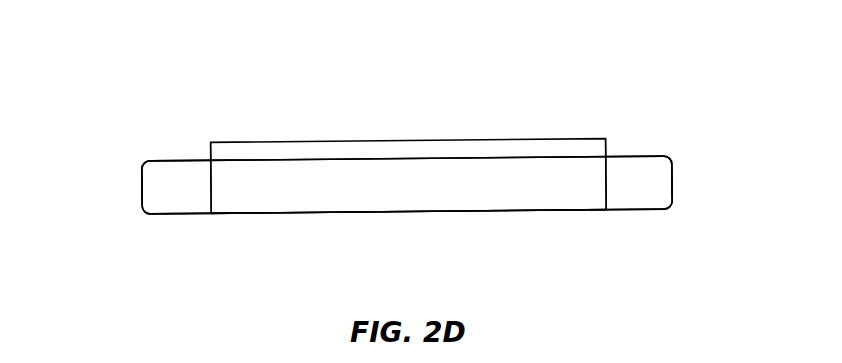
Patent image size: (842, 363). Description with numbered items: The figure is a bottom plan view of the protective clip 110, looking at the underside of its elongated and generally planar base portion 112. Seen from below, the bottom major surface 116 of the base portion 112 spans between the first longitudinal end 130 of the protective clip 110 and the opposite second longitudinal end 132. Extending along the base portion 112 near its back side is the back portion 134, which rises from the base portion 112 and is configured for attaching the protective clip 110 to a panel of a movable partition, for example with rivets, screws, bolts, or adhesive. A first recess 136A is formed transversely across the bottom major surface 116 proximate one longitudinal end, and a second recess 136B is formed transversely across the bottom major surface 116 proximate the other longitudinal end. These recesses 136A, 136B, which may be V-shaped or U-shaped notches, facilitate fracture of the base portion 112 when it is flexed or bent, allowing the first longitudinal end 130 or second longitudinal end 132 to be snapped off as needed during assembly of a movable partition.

The protective clip 110 is at (180, 92).
The base portion 112 is at (645, 156).
The bottom major surface 116 is at (313, 184).
The first longitudinal end 130 is at (142, 187).
The second longitudinal end 132 is at (673, 189).
The back portion 134 is at (294, 150).
The first recess 136A is at (607, 176).
The second recess 136B is at (211, 178).